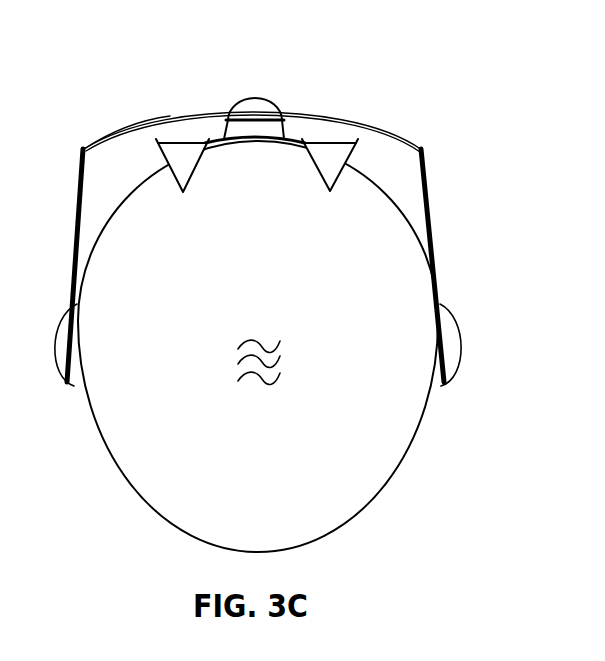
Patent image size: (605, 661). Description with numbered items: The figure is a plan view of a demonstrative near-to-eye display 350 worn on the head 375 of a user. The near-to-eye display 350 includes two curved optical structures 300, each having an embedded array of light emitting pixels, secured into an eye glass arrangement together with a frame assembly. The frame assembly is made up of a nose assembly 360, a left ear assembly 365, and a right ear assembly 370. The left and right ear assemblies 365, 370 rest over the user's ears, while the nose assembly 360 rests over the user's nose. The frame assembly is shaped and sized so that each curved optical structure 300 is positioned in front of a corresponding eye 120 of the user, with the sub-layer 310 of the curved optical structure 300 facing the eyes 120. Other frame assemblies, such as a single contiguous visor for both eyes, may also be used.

The eye 120 is at (319, 172).
The curved optical structure 300 is at (153, 119).
The sub-layer 310 is at (85, 135).
The near-to-eye display 350 is at (362, 45).
The nose assembly 360 is at (256, 118).
The left ear assembly 365 is at (79, 201).
The right ear assembly 370 is at (430, 175).
The head 375 is at (268, 467).